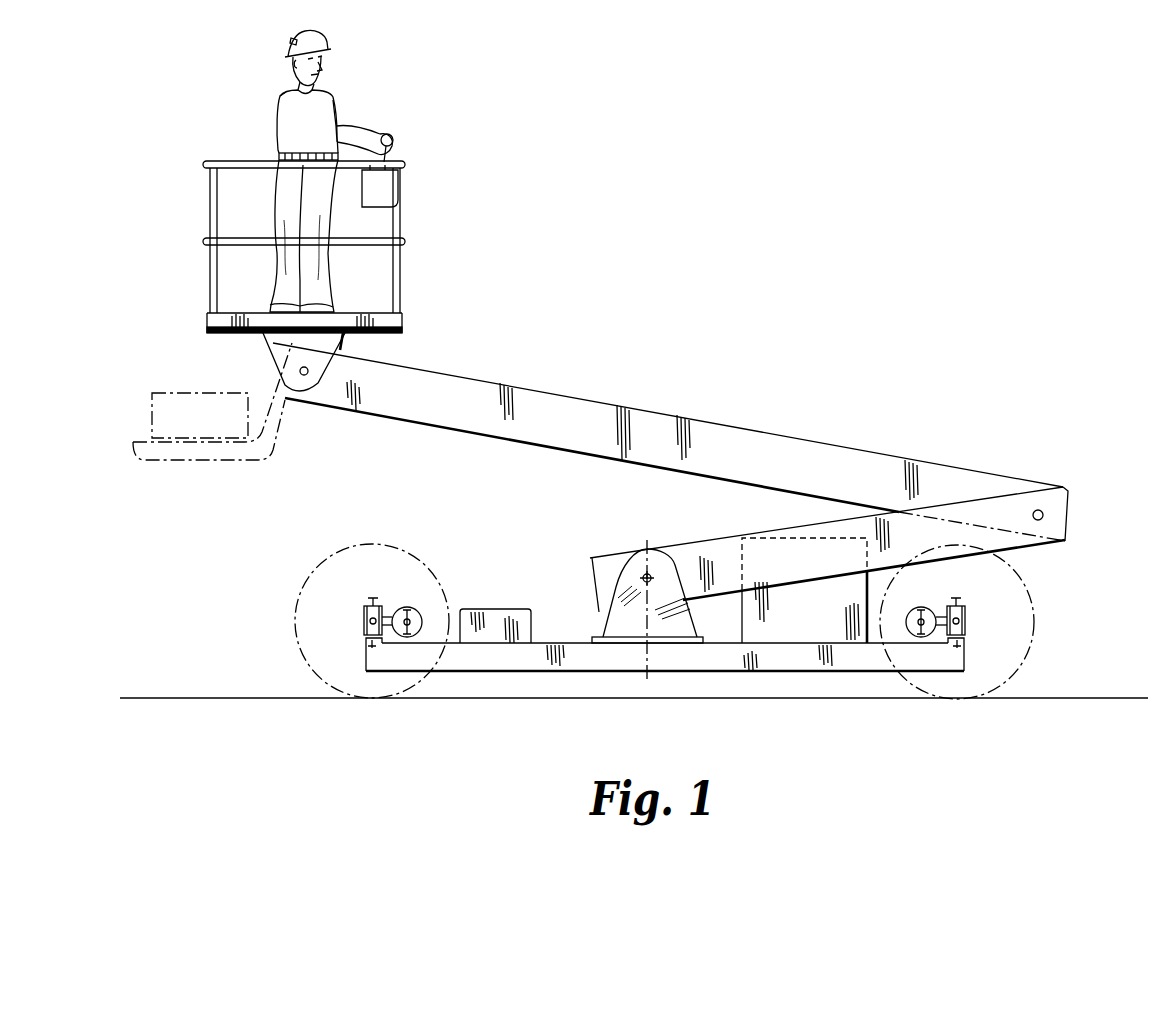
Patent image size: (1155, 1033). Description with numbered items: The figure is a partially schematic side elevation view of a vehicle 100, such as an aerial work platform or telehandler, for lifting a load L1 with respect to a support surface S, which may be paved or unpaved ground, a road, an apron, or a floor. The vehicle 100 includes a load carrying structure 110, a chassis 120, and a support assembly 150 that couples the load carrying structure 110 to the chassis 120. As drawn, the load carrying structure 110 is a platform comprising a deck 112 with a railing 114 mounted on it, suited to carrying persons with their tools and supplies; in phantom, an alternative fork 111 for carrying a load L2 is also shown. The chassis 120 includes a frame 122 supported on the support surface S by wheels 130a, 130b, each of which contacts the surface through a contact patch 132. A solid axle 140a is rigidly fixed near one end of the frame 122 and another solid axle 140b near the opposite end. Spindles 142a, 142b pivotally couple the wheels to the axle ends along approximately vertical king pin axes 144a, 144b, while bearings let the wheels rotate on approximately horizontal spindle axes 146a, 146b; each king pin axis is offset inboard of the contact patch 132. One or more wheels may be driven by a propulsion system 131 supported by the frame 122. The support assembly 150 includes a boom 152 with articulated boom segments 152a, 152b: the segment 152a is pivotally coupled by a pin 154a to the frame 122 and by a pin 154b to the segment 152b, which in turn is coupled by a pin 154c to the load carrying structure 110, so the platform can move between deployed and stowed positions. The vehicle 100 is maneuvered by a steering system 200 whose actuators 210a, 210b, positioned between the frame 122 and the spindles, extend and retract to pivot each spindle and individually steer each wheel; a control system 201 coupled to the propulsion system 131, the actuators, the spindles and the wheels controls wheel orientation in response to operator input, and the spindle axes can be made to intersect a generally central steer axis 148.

The vehicle 100 is at (939, 256).
The load carrying structure 110 is at (210, 335).
The fork 111 is at (207, 462).
The deck 112 is at (243, 335).
The railing 114 is at (208, 278).
The chassis 120 is at (574, 672).
The frame 122 is at (722, 655).
The wheel 130a is at (296, 618).
The wheel 130b is at (1034, 621).
The propulsion system 131 is at (808, 620).
The contact patch 132 is at (372, 700).
The solid axle 140a is at (321, 637).
The solid axle 140b is at (1010, 647).
The spindle 142a is at (363, 617).
The spindle 142b is at (960, 619).
The king pin axis 144a is at (367, 631).
The king pin axis 144b is at (962, 632).
The spindle axis 146a is at (367, 624).
The spindle axis 146b is at (962, 628).
The steer axis 148 is at (647, 677).
The support assembly 150 is at (884, 452).
The boom 152 is at (826, 371).
The boom segment 152a is at (785, 525).
The boom segment 152b is at (835, 465).
The pin 154a is at (647, 575).
The pin 154b is at (1040, 510).
The pin 154c is at (307, 372).
The steering system 200 is at (453, 651).
The control system 201 is at (398, 190).
The actuator 210a is at (424, 613).
The actuator 210b is at (906, 620).
The load L1 is at (274, 113).
The load L2 is at (150, 413).
The support surface S is at (213, 698).